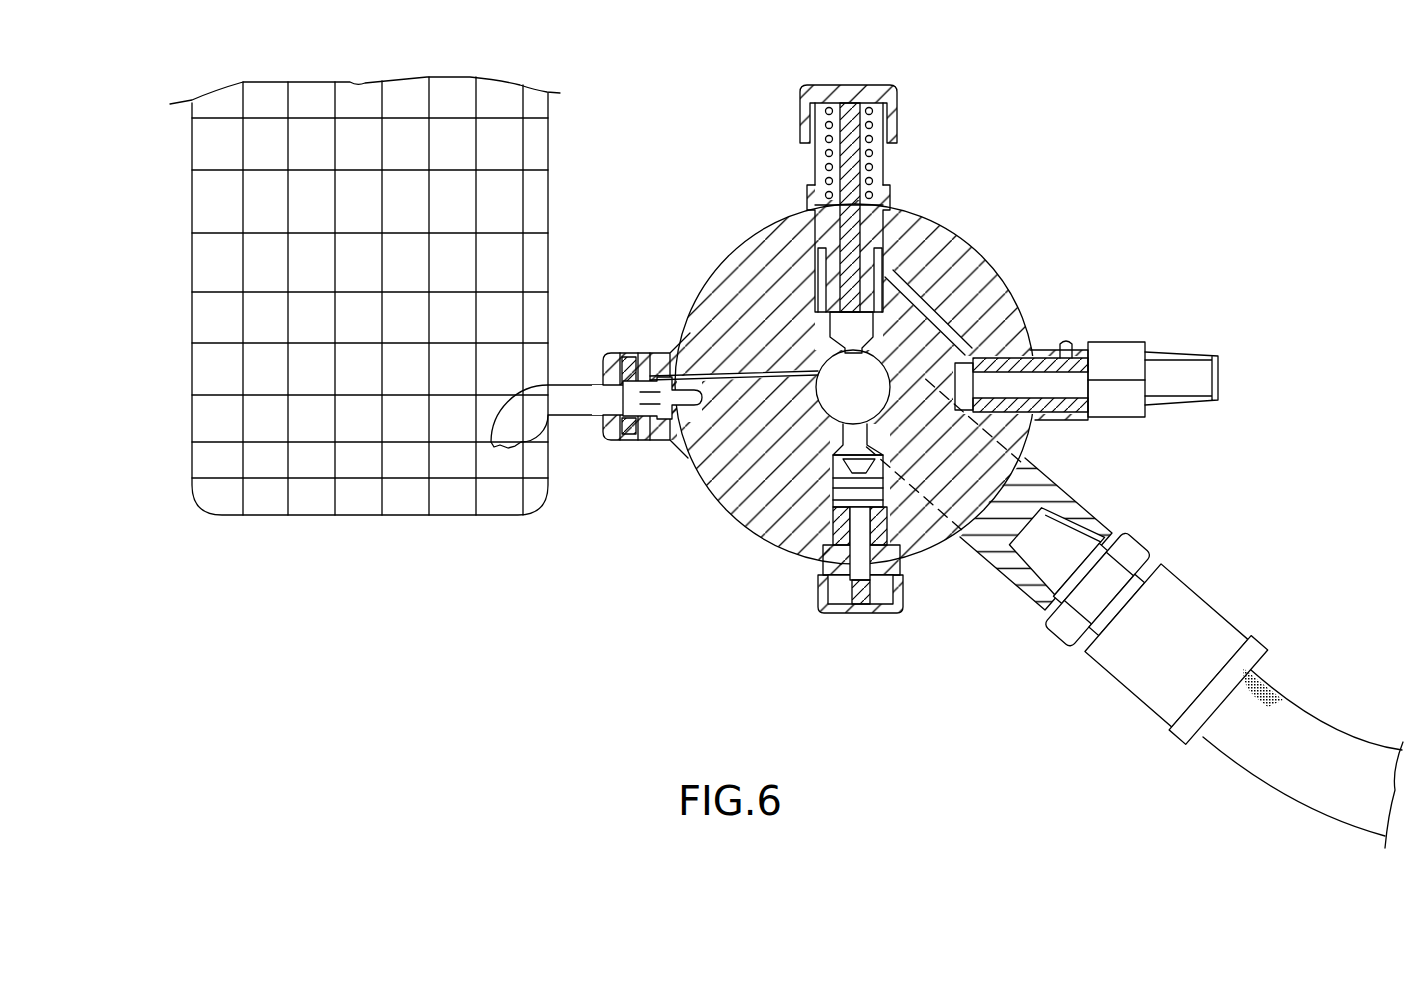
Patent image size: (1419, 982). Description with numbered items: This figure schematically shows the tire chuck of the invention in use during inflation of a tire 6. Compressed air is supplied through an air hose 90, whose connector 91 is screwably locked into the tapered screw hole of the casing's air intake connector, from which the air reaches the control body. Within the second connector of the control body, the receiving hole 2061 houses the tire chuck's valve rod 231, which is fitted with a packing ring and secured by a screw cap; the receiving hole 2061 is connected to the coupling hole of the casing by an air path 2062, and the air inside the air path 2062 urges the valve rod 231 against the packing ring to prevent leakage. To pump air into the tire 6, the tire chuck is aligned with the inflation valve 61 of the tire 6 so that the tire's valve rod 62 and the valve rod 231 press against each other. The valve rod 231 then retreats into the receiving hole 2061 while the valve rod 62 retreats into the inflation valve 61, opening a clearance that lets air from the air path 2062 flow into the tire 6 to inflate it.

The tire 6 is at (455, 490).
The inflation valve 61 is at (572, 408).
The valve rod 62 is at (603, 380).
The valve rod 231 is at (607, 356).
The receiving hole 2061 is at (655, 418).
The air path 2062 is at (757, 358).
The connector 91 is at (1207, 622).
The air hose 90 is at (1335, 752).